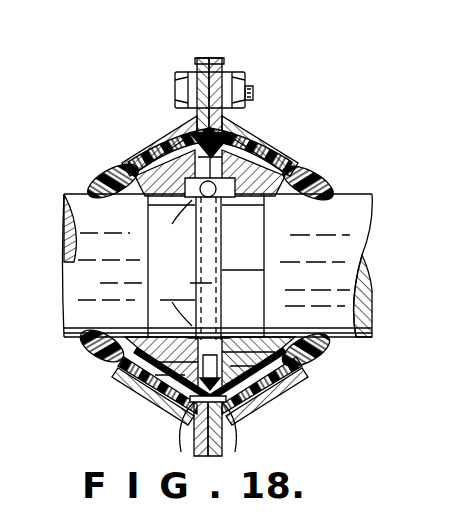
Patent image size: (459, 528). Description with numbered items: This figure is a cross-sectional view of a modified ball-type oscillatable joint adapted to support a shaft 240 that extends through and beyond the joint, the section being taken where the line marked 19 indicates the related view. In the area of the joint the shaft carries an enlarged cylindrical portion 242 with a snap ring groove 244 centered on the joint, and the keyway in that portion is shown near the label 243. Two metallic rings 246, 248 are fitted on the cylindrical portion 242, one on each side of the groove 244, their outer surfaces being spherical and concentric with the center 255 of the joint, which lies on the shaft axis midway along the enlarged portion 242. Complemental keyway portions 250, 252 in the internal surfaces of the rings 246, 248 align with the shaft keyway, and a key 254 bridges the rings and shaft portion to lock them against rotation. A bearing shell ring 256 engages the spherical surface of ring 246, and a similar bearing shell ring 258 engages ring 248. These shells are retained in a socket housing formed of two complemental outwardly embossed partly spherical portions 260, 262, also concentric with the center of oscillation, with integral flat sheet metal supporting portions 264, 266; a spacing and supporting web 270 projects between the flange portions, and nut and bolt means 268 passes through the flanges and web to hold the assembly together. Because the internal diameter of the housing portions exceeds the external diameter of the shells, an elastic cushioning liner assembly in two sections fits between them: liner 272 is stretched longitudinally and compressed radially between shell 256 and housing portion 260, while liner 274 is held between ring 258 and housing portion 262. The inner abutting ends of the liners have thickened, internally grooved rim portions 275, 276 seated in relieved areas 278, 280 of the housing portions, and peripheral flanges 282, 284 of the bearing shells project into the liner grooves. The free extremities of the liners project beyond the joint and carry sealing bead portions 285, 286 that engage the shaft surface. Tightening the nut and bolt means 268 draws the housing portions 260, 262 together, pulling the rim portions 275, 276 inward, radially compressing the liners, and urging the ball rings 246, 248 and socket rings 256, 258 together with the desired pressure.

The section line 19 is at (173, 267).
The shaft 240 is at (368, 214).
The enlarged cylindrical portion 242 is at (256, 256).
The upper saddle 243 is at (252, 205).
The snap ring groove 244 is at (200, 308).
The metallic ring 246 is at (130, 345).
The metallic ring 248 is at (278, 352).
The longitudinal keyway portion 250 is at (132, 168).
The longitudinal keyway portion 252 is at (266, 155).
The key 254 is at (240, 215).
The center 255 is at (268, 272).
The bearing shell ring 256 is at (152, 352).
The bearing shell ring 258 is at (262, 358).
The partly spherical housing portion 260 is at (152, 150).
The partly spherical housing portion 262 is at (285, 172).
The flat sheet metal supporting portion 264 is at (198, 62).
The flat sheet metal supporting portion 266 is at (230, 66).
The nut and bolt means 268 is at (254, 96).
The spacing and supporting web 270 is at (220, 58).
The cushioning liner 272 is at (183, 135).
The cushioning liner 274 is at (242, 135).
The thickened rim portion 275 is at (192, 402).
The thickened rim portion 276 is at (236, 402).
The relieved area 278 is at (165, 362).
The relieved area 280 is at (250, 385).
The peripheral flange 282 is at (187, 362).
The peripheral flange 284 is at (230, 340).
The sealing bead portion 285 is at (88, 341).
The sealing bead portion 286 is at (318, 355).